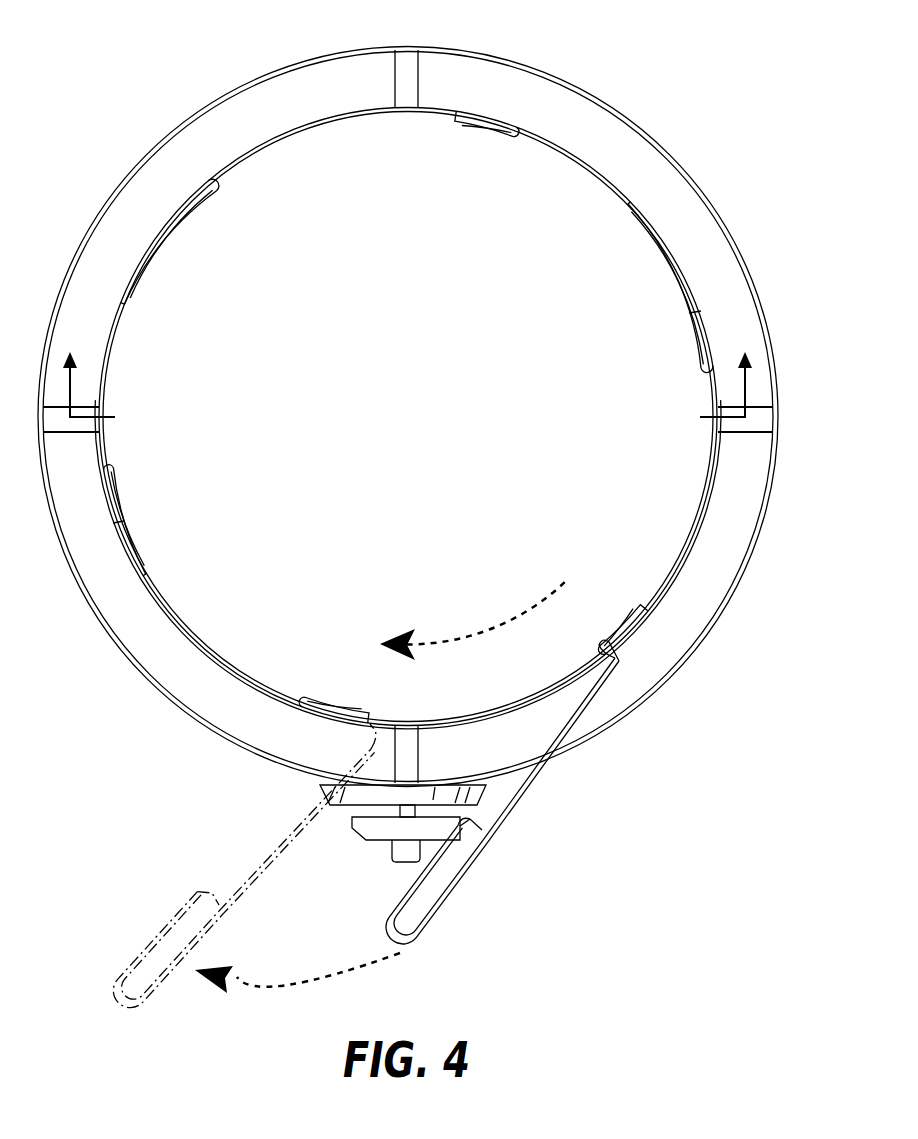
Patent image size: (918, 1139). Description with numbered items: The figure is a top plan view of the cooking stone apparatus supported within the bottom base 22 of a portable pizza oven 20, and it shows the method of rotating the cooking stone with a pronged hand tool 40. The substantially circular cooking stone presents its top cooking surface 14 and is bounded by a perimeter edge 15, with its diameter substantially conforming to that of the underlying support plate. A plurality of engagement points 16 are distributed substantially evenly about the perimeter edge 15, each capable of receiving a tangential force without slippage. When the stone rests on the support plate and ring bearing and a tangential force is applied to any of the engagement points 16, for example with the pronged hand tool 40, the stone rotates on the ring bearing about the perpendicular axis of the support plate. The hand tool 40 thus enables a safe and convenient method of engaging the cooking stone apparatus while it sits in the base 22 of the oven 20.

The top cooking surface 14 is at (280, 192).
The perimeter edge 15 is at (628, 226).
The engagement points 16 is at (505, 127).
The portable pizza oven 20 is at (718, 88).
The bottom base 22 is at (727, 604).
The pronged hand tool 40 is at (478, 870).